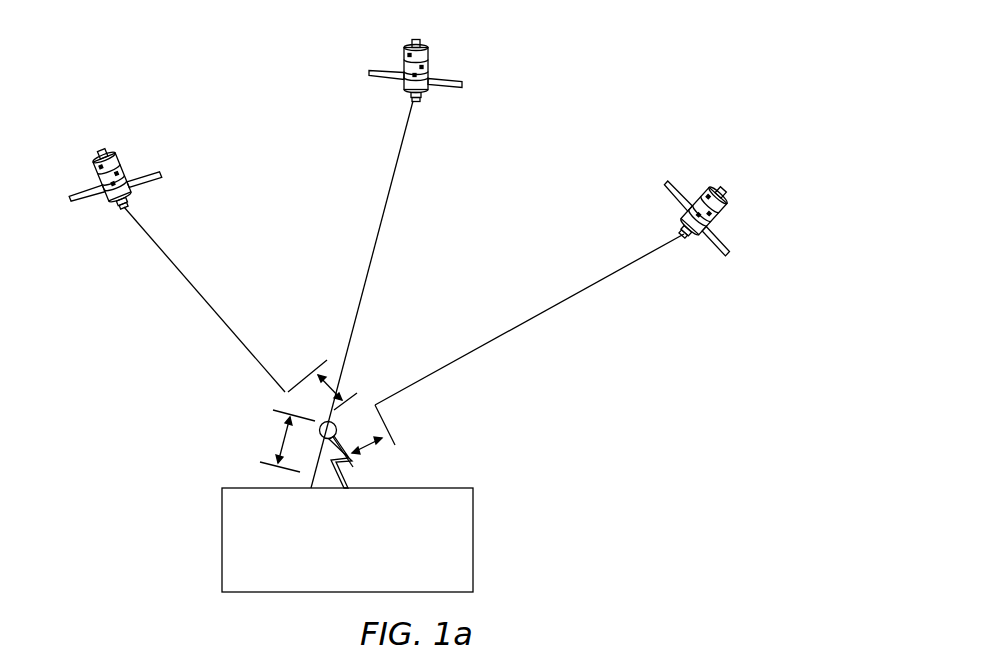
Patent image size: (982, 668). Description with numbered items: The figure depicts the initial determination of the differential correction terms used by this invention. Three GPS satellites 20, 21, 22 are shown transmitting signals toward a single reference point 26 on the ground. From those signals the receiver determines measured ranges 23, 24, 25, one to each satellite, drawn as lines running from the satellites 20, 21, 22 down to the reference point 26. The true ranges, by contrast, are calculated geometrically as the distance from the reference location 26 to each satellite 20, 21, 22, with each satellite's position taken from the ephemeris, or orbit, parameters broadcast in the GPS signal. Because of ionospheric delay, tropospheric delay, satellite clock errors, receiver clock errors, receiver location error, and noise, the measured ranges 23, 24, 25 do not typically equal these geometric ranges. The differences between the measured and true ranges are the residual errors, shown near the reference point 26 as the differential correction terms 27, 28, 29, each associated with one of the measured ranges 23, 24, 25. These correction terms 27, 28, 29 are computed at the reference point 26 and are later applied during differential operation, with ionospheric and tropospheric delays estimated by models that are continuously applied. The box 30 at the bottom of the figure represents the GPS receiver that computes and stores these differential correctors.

The GPS satellite 20 is at (108, 150).
The GPS satellite 21 is at (428, 46).
The GPS satellite 22 is at (724, 190).
The measured range 23 is at (180, 277).
The measured range 24 is at (387, 207).
The measured range 25 is at (495, 340).
The reference point 26 is at (324, 423).
The differential correction term 27 is at (333, 381).
The differential correction term 28 is at (270, 442).
The differential correction term 29 is at (392, 457).
The GPS receiver computing and storing differential correctors 30 is at (476, 553).